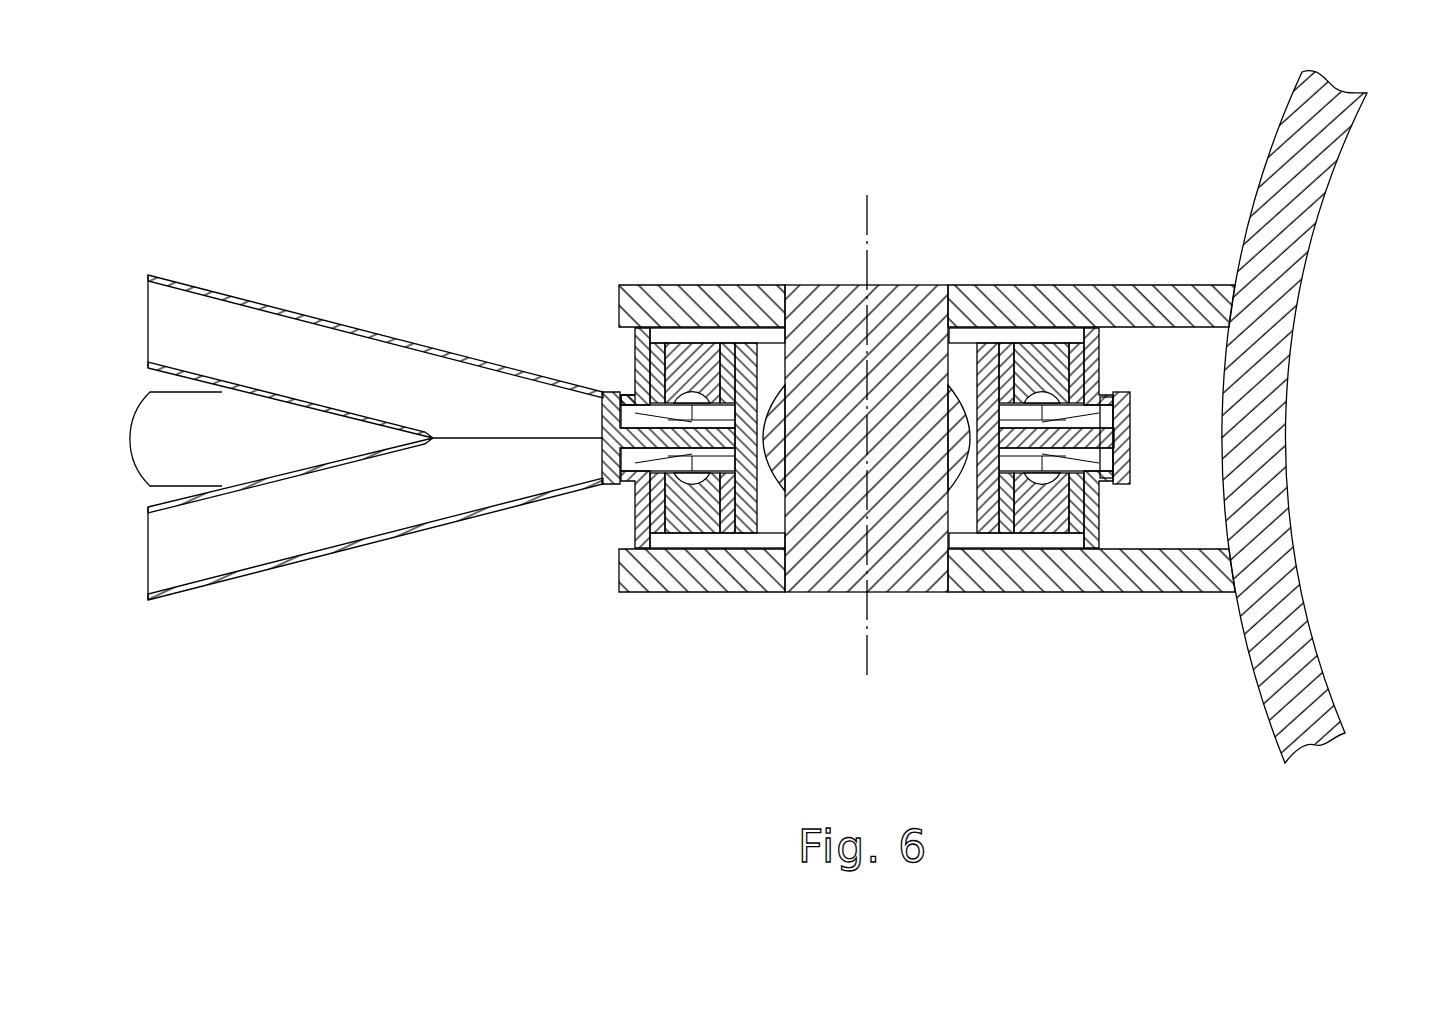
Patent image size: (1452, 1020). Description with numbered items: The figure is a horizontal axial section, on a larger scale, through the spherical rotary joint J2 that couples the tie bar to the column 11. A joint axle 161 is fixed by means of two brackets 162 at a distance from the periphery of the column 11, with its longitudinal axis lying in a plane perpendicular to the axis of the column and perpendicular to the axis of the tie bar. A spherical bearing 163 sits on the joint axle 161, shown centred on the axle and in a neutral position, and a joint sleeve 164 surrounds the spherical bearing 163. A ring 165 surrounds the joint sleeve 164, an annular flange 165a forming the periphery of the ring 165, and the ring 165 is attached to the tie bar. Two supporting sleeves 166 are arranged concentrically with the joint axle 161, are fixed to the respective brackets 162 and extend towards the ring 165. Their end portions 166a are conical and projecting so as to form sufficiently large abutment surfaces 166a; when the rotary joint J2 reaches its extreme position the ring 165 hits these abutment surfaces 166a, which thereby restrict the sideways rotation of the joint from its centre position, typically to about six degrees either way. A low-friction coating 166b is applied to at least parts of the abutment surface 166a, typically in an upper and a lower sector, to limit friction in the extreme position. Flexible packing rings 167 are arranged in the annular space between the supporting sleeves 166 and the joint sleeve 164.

The column 11 is at (1265, 152).
The spherical rotary joint J2 is at (922, 382).
The joint axle 161 is at (887, 308).
The bracket 162 is at (620, 297).
The spherical bearing 163 is at (770, 385).
The joint sleeve 164 is at (742, 533).
The ring 165 is at (634, 505).
The annular flange 165a is at (615, 405).
The supporting sleeve 166 is at (1103, 375).
The end portion / abutment surface 166a is at (1128, 470).
The low-friction coating 166b is at (1118, 452).
The flexible packing ring 167 is at (1040, 533).